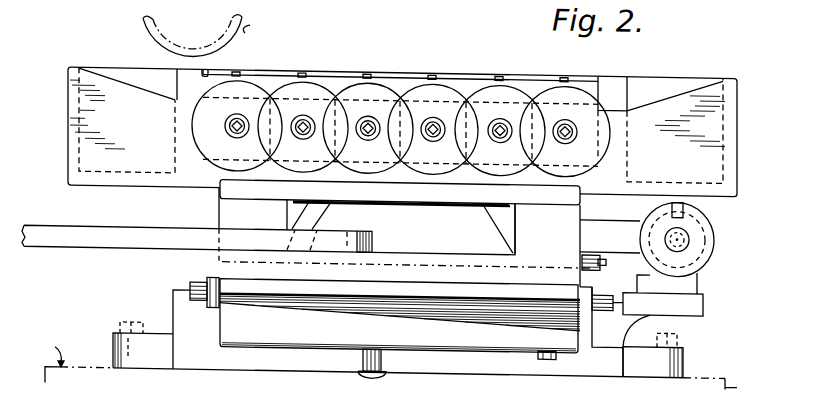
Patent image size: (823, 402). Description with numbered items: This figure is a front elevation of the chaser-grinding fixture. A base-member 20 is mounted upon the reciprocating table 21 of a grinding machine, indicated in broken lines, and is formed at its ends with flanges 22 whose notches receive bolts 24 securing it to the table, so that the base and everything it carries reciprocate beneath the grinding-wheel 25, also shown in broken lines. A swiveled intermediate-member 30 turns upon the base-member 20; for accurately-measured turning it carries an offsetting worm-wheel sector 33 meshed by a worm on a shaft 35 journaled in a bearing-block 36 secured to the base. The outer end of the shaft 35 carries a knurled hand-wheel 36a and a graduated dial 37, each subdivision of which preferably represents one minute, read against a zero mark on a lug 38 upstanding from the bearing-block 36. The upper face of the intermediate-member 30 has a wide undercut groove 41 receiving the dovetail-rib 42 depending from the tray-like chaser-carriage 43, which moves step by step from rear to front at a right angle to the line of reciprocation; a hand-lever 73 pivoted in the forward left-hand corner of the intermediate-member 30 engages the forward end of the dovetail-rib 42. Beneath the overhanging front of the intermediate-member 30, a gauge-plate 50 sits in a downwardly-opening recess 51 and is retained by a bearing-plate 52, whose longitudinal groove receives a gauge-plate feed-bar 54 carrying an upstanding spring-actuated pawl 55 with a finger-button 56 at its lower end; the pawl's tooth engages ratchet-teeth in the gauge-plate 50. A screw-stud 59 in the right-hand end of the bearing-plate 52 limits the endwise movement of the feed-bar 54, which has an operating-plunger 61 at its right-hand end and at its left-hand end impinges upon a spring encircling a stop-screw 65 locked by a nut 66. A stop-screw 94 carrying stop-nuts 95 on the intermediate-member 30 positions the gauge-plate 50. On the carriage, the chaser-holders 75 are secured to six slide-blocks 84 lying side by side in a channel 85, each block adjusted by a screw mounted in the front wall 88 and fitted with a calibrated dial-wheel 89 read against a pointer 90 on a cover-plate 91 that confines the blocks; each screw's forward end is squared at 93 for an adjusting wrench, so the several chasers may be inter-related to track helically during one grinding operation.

The base-member 20 is at (181, 312).
The reciprocating table 21 is at (100, 370).
The flanges 22 is at (155, 356).
The bolts 24 is at (128, 320).
The grinding-wheel 25 is at (152, 37).
The swiveled intermediate-member 30 is at (228, 208).
The worm-wheel sector 33 is at (610, 241).
The shaft 35 is at (685, 234).
The bearing-block 36 is at (690, 269).
The knurled hand-wheel 36a is at (713, 232).
The graduated dial 37 is at (705, 216).
The lug 38 is at (668, 204).
The undercut groove 41 is at (500, 250).
The dovetail-rib 42 is at (430, 228).
The chaser-carriage 43 is at (78, 103).
The gauge-plate 50 is at (590, 271).
The downwardly-opening recess 51 is at (240, 256).
The bearing-plate 52 is at (305, 329).
The gauge-plate feed-bar 54 is at (583, 324).
The spring-actuated pawl 55 is at (360, 348).
The finger-button 56 is at (372, 374).
The screw-stud 59 is at (540, 349).
The operating-plunger 61 is at (598, 304).
The stop-screw 65 is at (161, 269).
The nut 66 is at (212, 305).
The hand-lever 73 is at (107, 240).
The chaser-holders 75 is at (207, 68).
The slide-blocks 84 is at (205, 122).
The channel 85 is at (592, 136).
The front wall 88 is at (183, 106).
The calibrated dial-wheel 89 is at (277, 165).
The pointer 90 is at (368, 68).
The cover-plate 91 is at (618, 58).
The squared end 93 is at (425, 126).
The stop-screw 94 is at (606, 252).
The stop-nuts 95 is at (587, 248).